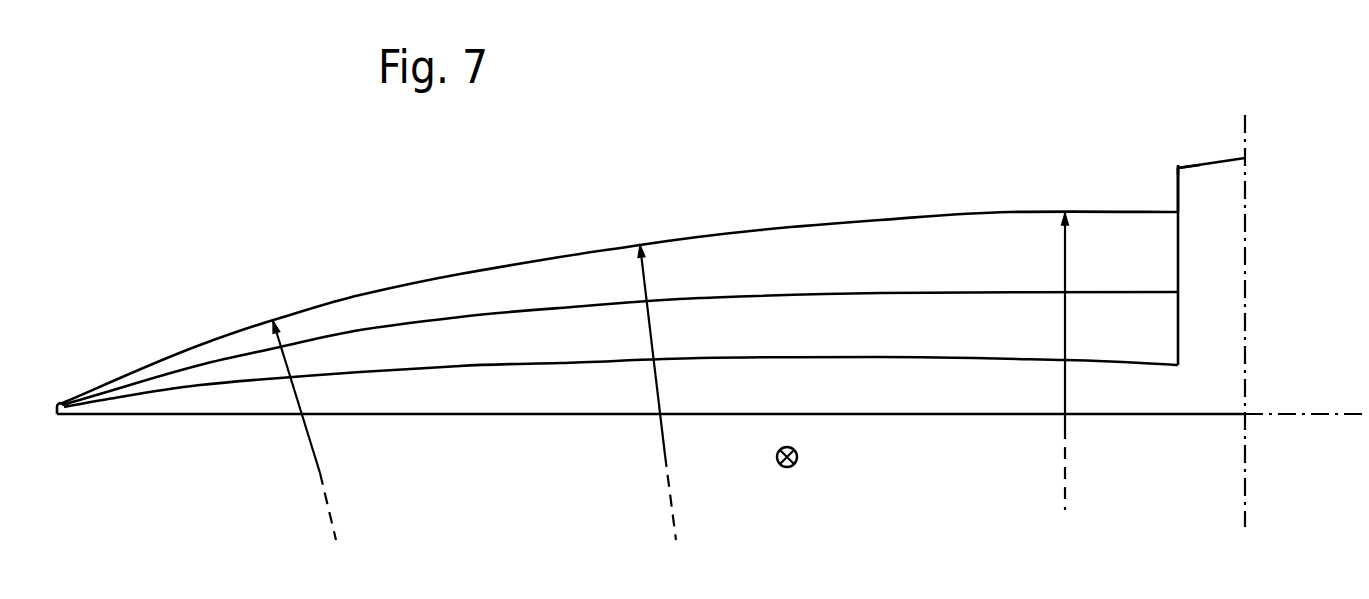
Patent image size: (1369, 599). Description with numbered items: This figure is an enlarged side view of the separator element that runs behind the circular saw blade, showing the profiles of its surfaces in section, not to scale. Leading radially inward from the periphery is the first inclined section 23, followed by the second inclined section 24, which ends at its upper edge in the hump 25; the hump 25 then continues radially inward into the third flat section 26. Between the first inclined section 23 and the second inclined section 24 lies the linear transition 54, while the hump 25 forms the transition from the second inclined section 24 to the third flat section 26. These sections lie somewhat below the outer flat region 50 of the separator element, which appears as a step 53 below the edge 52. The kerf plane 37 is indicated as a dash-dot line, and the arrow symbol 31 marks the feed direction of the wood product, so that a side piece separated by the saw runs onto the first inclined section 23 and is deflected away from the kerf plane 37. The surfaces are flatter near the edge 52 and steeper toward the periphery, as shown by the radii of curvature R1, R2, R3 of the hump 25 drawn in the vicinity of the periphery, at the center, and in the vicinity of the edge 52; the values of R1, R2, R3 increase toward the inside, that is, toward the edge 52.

The first inclined section 23 is at (680, 332).
The second inclined section 24 is at (860, 248).
The hump 25 is at (1099, 210).
The third flat section 26 is at (1013, 210).
The feed direction 31 is at (797, 453).
The kerf plane 37 is at (1311, 410).
The outer flat region 50 is at (1222, 160).
The edge 52 is at (1182, 172).
The step 53 is at (1175, 182).
The linear transition 54 is at (777, 297).
The radius of curvature R1 is at (321, 436).
The radius of curvature R2 is at (674, 397).
The radius of curvature R3 is at (1084, 371).